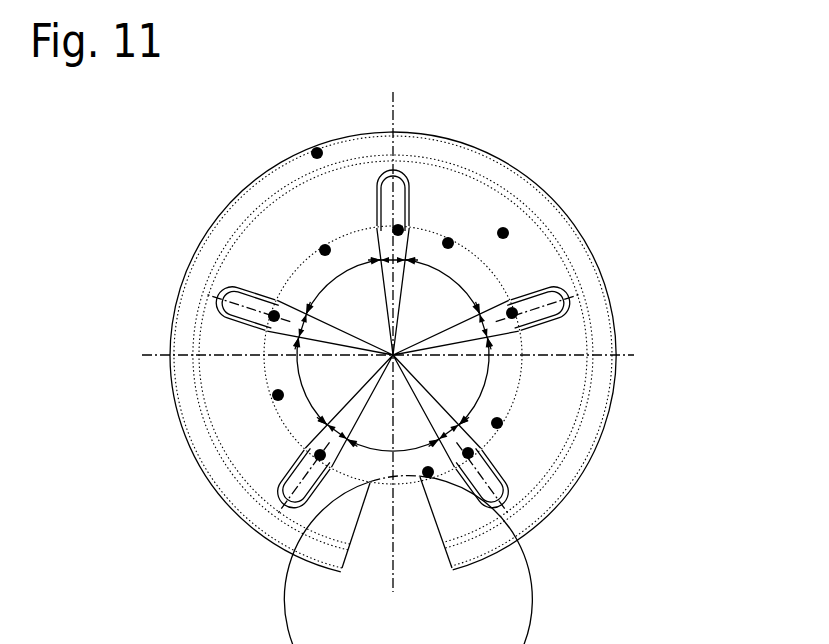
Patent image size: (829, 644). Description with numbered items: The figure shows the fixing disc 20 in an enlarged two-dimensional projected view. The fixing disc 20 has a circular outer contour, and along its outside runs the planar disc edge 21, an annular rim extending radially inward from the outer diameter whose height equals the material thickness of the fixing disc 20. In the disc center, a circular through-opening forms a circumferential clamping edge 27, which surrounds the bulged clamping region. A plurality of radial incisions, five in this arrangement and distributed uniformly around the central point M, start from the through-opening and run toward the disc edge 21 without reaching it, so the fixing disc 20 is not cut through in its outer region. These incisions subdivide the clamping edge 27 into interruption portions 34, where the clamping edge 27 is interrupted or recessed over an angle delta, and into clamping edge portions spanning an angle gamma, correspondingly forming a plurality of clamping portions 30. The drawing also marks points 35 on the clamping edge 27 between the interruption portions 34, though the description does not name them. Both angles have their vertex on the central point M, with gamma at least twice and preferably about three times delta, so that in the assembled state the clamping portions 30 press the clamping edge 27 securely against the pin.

The fixing disc 20 is at (480, 346).
The disc edge 21 is at (317, 153).
The clamping edge 27 is at (526, 400).
The clamping portions 30 is at (503, 233).
The interruption portions 34 is at (398, 230).
The web sections 35 is at (325, 250).